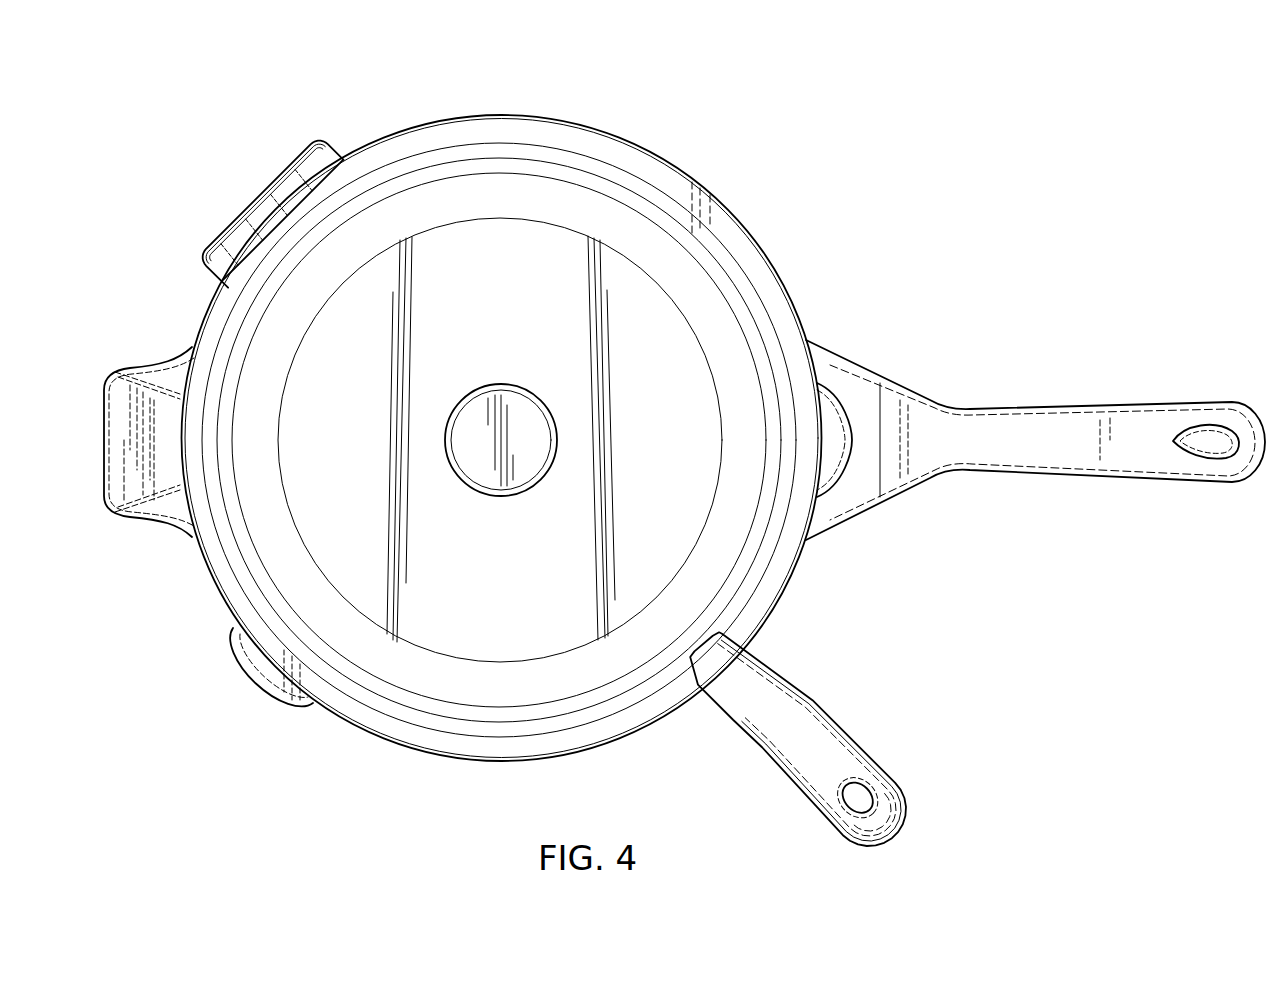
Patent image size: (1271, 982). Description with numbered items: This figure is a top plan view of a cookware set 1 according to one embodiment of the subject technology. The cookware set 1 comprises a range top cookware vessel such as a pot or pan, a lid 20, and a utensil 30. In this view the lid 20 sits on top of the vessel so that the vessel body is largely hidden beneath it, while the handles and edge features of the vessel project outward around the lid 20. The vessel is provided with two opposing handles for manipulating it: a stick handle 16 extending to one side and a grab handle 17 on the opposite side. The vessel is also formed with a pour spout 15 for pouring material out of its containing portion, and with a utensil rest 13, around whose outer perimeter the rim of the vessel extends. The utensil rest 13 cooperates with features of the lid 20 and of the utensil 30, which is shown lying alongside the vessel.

The cookware set 1 is at (157, 127).
The utensil rest 13 is at (310, 168).
The pour spout 15 is at (260, 697).
The stick handle 16 is at (924, 426).
The grab handle 17 is at (120, 412).
The lid 20 is at (633, 237).
The utensil 30 is at (827, 753).